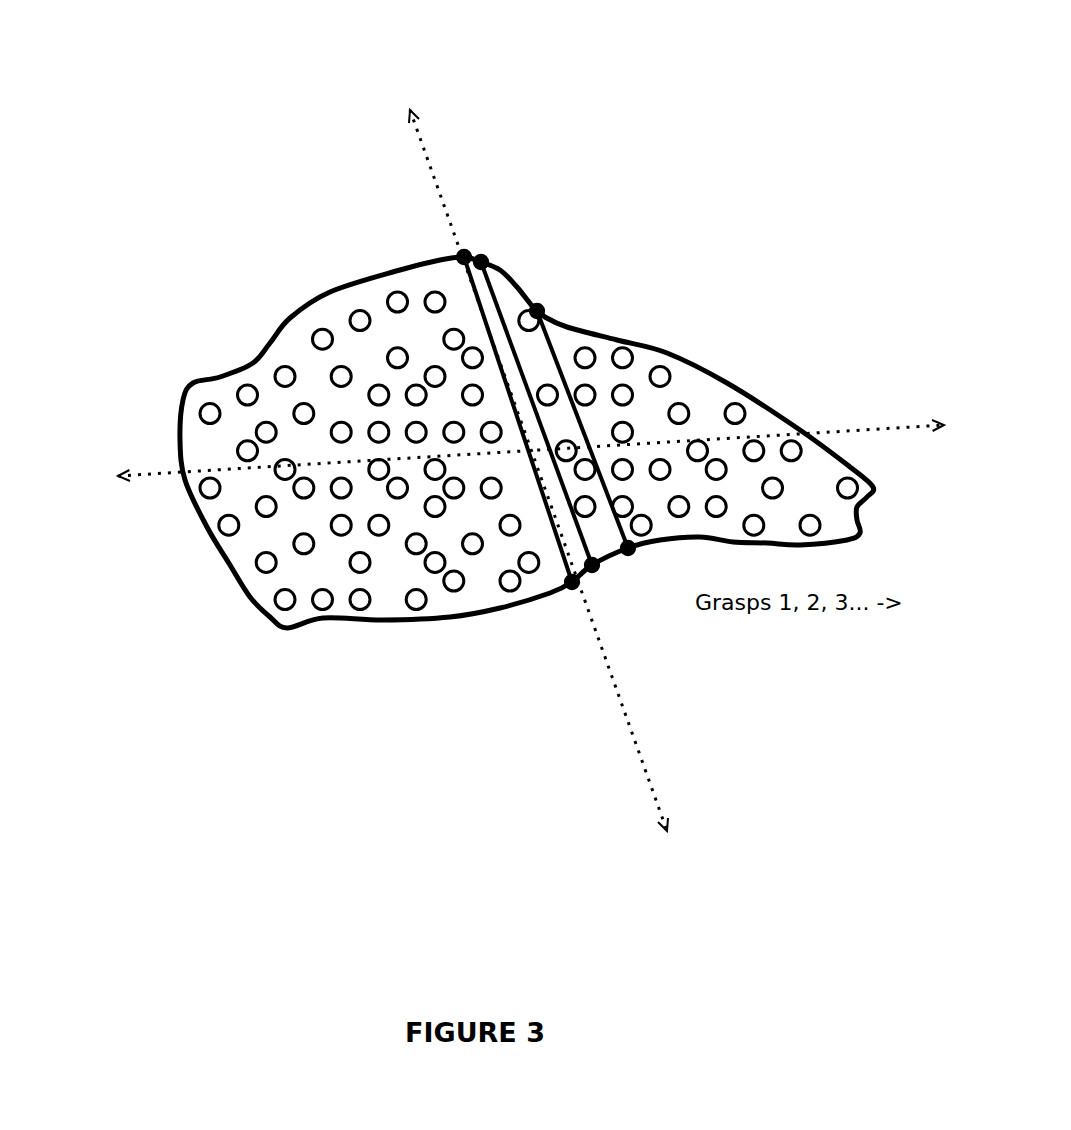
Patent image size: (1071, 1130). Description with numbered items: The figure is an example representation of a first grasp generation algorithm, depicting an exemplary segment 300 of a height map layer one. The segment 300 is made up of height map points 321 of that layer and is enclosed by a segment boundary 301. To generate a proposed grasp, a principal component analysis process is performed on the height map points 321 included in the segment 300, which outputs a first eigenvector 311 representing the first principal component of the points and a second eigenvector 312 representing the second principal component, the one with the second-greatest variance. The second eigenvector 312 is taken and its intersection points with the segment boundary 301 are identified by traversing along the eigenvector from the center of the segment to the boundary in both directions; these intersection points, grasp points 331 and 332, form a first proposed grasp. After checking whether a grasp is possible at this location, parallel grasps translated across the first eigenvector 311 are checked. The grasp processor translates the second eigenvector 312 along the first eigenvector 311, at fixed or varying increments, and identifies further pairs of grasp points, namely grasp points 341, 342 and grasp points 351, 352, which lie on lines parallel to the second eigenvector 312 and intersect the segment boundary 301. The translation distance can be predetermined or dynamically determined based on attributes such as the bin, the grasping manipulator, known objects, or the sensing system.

The segment 300 is at (473, 509).
The segment boundary 301 is at (257, 598).
The first eigenvector 311 is at (486, 501).
The second eigenvector 312 is at (495, 428).
The height map point 321 is at (748, 344).
The grasp point 331 is at (453, 252).
The grasp point 332 is at (572, 594).
The grasp point 341 is at (483, 250).
The grasp point 342 is at (597, 579).
The grasp point 351 is at (545, 303).
The grasp point 352 is at (635, 563).